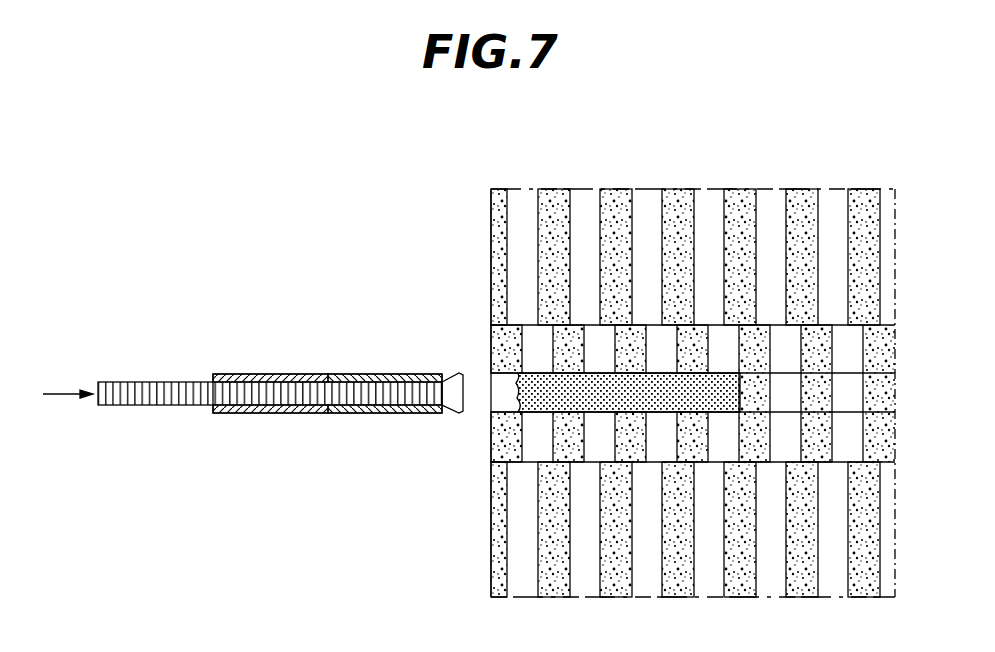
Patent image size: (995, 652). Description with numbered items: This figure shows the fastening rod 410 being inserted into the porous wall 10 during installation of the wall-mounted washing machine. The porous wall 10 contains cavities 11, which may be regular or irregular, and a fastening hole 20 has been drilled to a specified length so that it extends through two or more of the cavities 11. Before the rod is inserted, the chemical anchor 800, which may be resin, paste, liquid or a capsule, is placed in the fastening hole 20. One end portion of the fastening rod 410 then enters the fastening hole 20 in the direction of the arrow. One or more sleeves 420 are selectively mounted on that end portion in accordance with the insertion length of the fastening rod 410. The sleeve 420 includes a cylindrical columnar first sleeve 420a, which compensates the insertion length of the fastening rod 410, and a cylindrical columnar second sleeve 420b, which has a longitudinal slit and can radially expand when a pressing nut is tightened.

The porous wall 10 is at (500, 503).
The cavities 11 is at (597, 345).
The fastening hole 20 is at (632, 375).
The chemical anchor 800 is at (740, 393).
The fastening rod 410 is at (147, 393).
The sleeve 420 is at (327, 340).
The first sleeve 420a is at (280, 375).
The second sleeve 420b is at (385, 364).